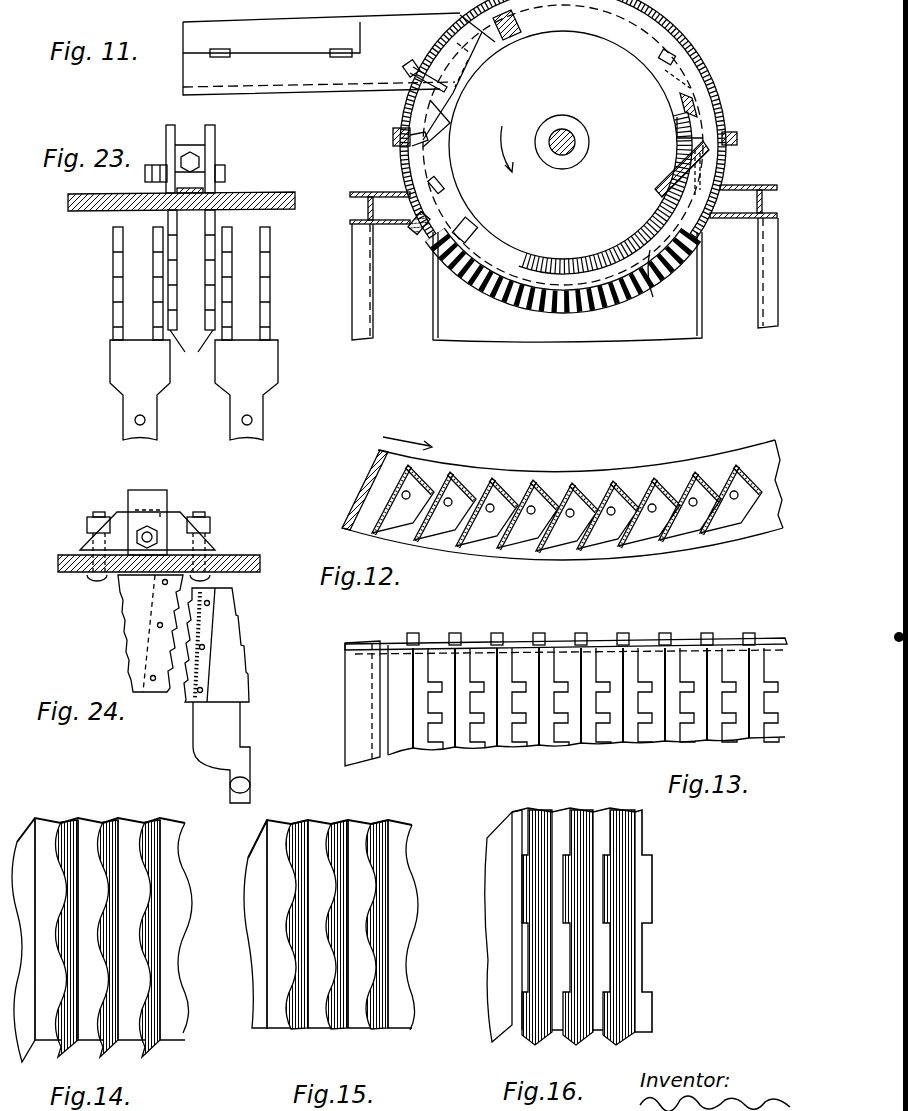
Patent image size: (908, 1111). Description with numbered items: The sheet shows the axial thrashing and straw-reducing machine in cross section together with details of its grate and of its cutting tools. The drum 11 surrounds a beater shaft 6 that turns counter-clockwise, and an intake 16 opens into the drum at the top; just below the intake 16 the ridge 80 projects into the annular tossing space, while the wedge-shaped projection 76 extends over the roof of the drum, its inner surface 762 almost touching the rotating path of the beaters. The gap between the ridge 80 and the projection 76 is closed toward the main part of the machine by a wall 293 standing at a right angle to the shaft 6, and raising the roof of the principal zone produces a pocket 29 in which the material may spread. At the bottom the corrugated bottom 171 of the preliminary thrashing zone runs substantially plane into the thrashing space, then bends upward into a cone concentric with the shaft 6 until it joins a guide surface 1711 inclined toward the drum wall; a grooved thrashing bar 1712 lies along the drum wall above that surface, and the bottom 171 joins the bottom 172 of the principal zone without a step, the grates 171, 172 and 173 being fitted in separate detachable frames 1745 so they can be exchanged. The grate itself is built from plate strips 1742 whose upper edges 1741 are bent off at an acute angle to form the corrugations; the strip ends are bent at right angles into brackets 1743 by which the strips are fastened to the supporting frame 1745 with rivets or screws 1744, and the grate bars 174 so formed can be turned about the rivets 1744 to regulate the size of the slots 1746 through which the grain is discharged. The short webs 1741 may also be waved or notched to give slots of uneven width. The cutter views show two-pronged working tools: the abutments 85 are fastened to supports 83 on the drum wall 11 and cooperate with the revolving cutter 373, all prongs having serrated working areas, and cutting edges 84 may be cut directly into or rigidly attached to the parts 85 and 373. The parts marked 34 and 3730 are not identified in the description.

In FIG. 11, the intake 16 is at (452, 22).
In FIG. 11, the pocket 29 is at (660, 10).
In FIG. 11, the wall 293 is at (453, 93).
In FIG. 11, the wedge-shaped projection 76 is at (588, 20).
In FIG. 11, the inner surface of projection 762 is at (617, 38).
In FIG. 11, the drum 11 is at (717, 78).
In FIG. 23, the drum 11 is at (88, 206).
In FIG. 24, the drum 11 is at (78, 572).
In FIG. 11, the grooved thrashing bar 1712 is at (700, 143).
In FIG. 11, the ridge 80 is at (395, 122).
In FIG. 11, the beater shaft 6 is at (576, 140).
In FIG. 11, the guide surface 1711 is at (680, 165).
In FIG. 11, the shaft 34 is at (566, 160).
In FIG. 11, the stripper lever 3730 is at (432, 228).
In FIG. 11, the corrugated bottom of preliminary thrashing zone 171 is at (600, 258).
In FIG. 11, the bottom of principal thrashing zone 172 is at (665, 281).
In FIG. 11, the grate 173 is at (510, 306).
In FIG. 23, the supports 83 is at (200, 150).
In FIG. 24, the supports 83 is at (174, 522).
In FIG. 23, the cutting edges 84 is at (158, 285).
In FIG. 24, the cutting edges 84 is at (199, 680).
In FIG. 23, the abutments 85 is at (191, 296).
In FIG. 23, the revolving cutter 373 is at (160, 333).
In FIG. 24, the revolving cutter 373 is at (228, 671).
In FIG. 12, the supporting frame 1745 is at (375, 460).
In FIG. 13, the supporting frame 1745 is at (352, 660).
In FIG. 12, the plate strips 1742 is at (522, 492).
In FIG. 16, the plate strips 1742 is at (500, 945).
In FIG. 12, the upper edges of plate strips 1741 is at (582, 480).
In FIG. 14, the upper edges of plate strips 1741 is at (170, 1007).
In FIG. 15, the upper edges of plate strips 1741 is at (280, 987).
In FIG. 16, the upper edges of plate strips 1741 is at (522, 887).
In FIG. 12, the slots 1746 is at (682, 477).
In FIG. 14, the slots 1746 is at (152, 877).
In FIG. 15, the slots 1746 is at (300, 877).
In FIG. 16, the slots 1746 is at (538, 970).
In FIG. 12, the brackets 1743 is at (562, 535).
In FIG. 12, the rivets or screws 1744 is at (663, 512).
In FIG. 13, the rivets or screws 1744 is at (667, 633).
In FIG. 13, the grate bars 174 is at (490, 740).